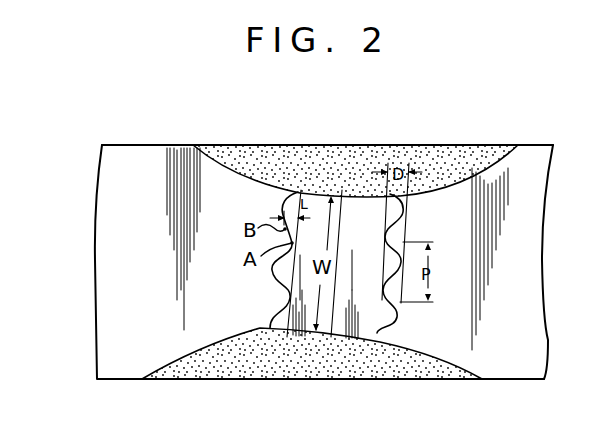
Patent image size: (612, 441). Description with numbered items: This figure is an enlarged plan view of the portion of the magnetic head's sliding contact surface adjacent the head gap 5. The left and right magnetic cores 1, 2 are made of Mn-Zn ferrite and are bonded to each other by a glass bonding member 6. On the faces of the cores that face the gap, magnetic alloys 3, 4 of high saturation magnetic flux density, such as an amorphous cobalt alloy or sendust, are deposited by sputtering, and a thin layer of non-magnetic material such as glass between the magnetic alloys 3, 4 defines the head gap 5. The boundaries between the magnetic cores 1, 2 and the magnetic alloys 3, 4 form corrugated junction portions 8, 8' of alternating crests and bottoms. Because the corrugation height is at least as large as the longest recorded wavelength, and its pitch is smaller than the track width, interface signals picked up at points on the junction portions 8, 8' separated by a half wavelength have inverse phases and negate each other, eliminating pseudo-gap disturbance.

The magnetic core 1 is at (103, 262).
The magnetic core 2 is at (535, 254).
The magnetic alloy 3 is at (298, 333).
The magnetic alloy 4 is at (362, 335).
The head gap 5 is at (351, 196).
The bonding member 6 is at (270, 152).
The junction portion 8 is at (252, 260).
The junction portion 8' is at (421, 269).